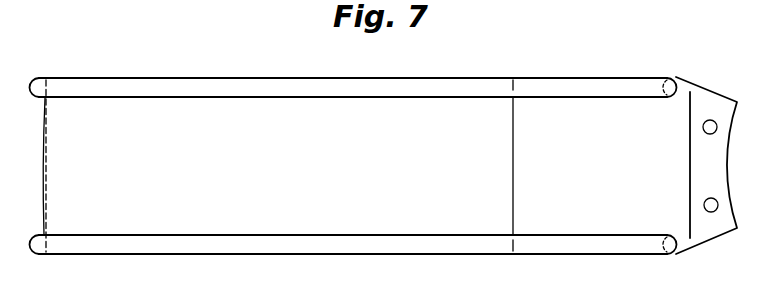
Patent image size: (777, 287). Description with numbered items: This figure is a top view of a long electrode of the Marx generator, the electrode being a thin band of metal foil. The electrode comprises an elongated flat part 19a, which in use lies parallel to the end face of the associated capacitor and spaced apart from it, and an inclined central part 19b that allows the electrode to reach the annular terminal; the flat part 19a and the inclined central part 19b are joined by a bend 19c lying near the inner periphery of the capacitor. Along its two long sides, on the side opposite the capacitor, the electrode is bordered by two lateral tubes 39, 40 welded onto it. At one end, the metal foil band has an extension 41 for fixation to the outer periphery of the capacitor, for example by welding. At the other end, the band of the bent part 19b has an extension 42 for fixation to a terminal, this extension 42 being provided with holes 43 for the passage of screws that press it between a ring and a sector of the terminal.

The lateral tube 39 is at (291, 66).
The lateral tube 40 is at (452, 255).
The extension 41 is at (44, 165).
The elongated flat part 19a is at (438, 142).
The inclined central part 19b is at (598, 122).
The bend 19c is at (515, 124).
The extension 42 is at (717, 164).
The holes 43 is at (713, 121).